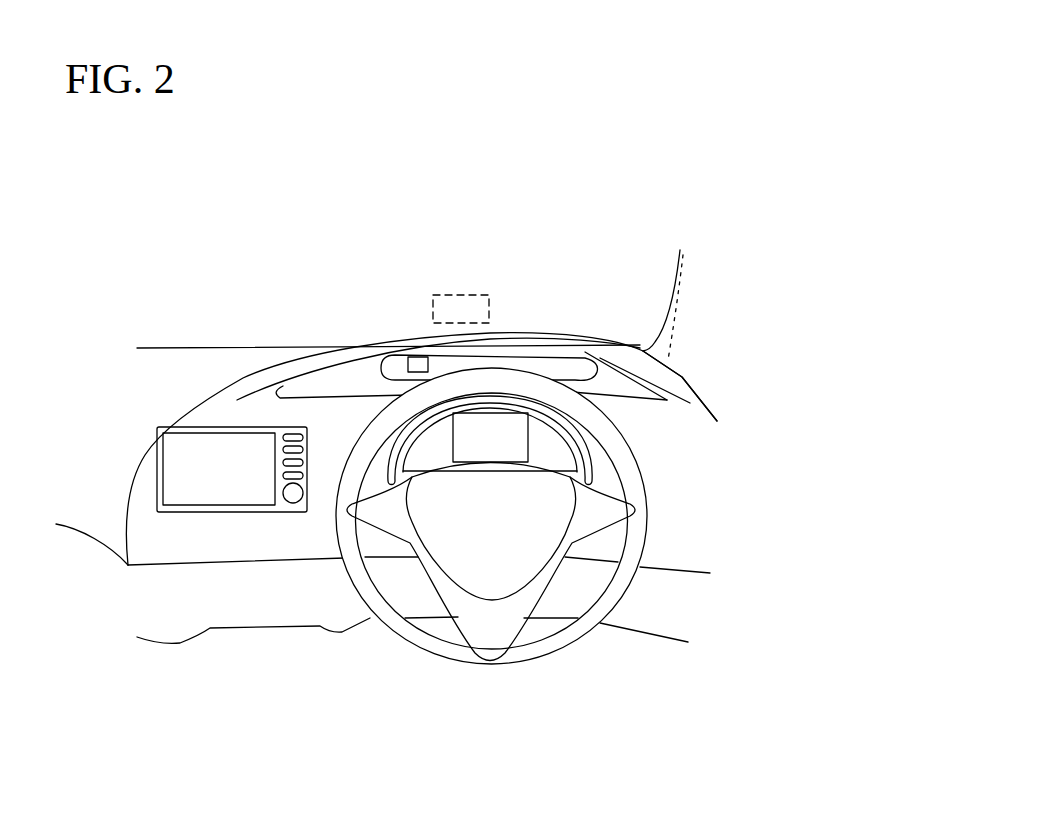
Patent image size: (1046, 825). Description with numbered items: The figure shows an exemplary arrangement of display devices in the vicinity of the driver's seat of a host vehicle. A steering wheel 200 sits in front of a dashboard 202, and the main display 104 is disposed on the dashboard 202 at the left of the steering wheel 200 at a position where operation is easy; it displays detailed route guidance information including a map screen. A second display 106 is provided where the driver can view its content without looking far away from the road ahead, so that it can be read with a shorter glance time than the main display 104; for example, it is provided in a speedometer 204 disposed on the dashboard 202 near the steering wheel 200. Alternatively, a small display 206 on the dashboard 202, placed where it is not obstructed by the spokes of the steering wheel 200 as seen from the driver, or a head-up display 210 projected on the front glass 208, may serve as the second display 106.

The main display 104 is at (197, 455).
The second display 106 is at (420, 364).
The steering wheel 200 is at (635, 537).
The dashboard 202 is at (333, 423).
The speedometer 204 is at (643, 348).
The small display 206 is at (493, 437).
The front glass 208 is at (612, 305).
The head-up display (HUD) 210 is at (480, 292).